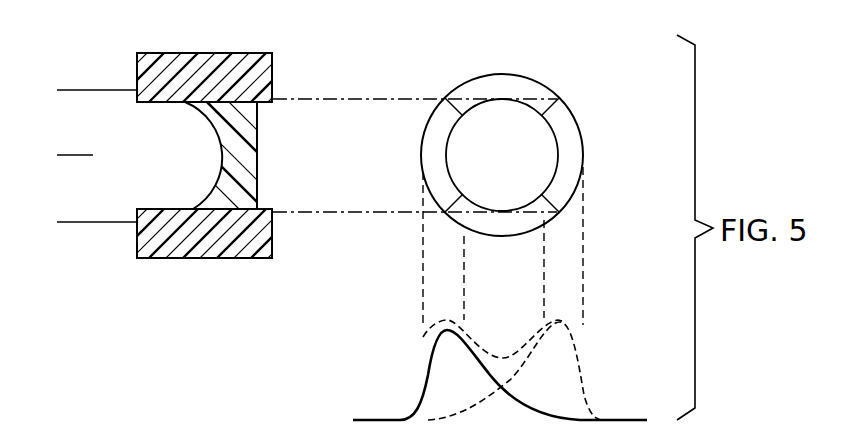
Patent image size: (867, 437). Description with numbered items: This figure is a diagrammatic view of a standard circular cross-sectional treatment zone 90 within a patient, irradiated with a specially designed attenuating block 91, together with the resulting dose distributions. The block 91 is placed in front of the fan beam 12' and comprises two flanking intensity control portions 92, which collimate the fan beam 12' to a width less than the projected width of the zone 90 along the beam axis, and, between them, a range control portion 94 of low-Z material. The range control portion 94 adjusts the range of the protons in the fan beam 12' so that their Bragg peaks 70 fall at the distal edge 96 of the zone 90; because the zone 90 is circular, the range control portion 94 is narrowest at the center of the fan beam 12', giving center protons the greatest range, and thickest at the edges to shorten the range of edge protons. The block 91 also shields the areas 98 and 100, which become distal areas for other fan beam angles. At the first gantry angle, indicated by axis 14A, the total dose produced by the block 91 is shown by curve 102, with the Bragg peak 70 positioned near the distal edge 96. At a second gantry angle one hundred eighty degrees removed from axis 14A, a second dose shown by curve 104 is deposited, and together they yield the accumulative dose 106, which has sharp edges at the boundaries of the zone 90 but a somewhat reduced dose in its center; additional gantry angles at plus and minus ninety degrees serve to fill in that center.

The fan beam 12' is at (97, 243).
The fan beam axis at the first gantry angle 14A is at (75, 155).
The Bragg peak 70 is at (560, 328).
The treatment zone 90 is at (526, 162).
The block 91 is at (217, 163).
The intensity control portions 92 is at (177, 53).
The range control portion 94 is at (258, 145).
The distal edge 96 is at (567, 132).
The shielded area 98 is at (490, 75).
The shielded area 100 is at (507, 226).
The dose curve at first gantry angle 102 is at (578, 360).
The dose curve at second gantry angle 104 is at (428, 363).
The accumulative dose 106 is at (447, 318).